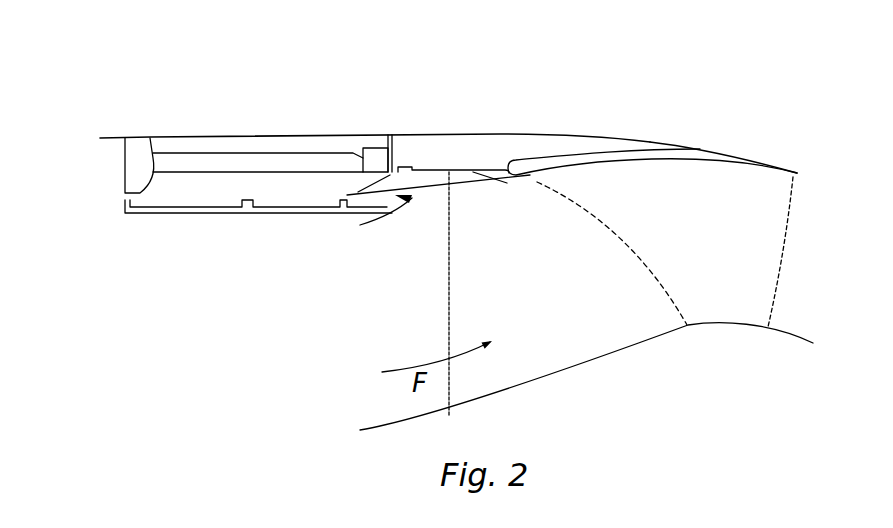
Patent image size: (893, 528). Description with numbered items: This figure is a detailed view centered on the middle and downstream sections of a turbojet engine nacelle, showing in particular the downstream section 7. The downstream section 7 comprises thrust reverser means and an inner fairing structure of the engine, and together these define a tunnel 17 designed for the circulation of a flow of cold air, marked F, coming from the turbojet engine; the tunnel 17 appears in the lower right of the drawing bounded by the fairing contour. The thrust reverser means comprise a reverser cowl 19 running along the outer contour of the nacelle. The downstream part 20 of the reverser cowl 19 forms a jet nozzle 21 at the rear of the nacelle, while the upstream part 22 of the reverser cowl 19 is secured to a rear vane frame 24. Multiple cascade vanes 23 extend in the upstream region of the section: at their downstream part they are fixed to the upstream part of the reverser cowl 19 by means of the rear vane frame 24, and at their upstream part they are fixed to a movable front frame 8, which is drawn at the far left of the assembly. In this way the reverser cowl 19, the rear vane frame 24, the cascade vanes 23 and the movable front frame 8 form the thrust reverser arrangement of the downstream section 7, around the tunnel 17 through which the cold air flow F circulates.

The downstream section 7 is at (606, 87).
The movable front frame 8 is at (151, 126).
The tunnel 17 is at (731, 250).
The reverser cowl 19 is at (513, 126).
The downstream part 20 is at (623, 140).
The jet nozzle 21 is at (700, 140).
The upstream part 22 is at (396, 150).
The cascade vanes 23 is at (265, 138).
The rear vane frame 24 is at (368, 127).